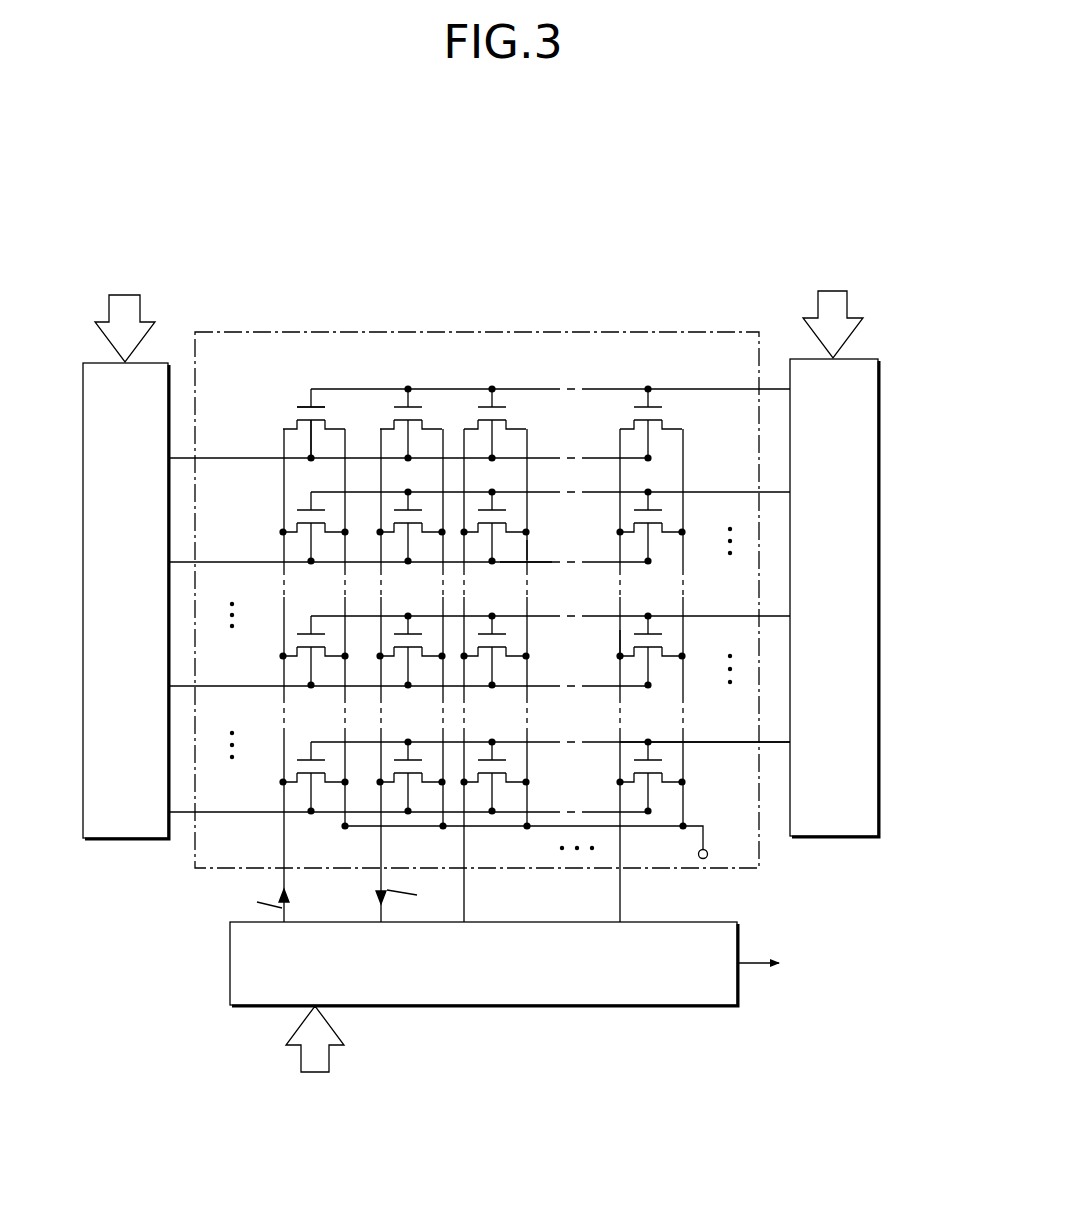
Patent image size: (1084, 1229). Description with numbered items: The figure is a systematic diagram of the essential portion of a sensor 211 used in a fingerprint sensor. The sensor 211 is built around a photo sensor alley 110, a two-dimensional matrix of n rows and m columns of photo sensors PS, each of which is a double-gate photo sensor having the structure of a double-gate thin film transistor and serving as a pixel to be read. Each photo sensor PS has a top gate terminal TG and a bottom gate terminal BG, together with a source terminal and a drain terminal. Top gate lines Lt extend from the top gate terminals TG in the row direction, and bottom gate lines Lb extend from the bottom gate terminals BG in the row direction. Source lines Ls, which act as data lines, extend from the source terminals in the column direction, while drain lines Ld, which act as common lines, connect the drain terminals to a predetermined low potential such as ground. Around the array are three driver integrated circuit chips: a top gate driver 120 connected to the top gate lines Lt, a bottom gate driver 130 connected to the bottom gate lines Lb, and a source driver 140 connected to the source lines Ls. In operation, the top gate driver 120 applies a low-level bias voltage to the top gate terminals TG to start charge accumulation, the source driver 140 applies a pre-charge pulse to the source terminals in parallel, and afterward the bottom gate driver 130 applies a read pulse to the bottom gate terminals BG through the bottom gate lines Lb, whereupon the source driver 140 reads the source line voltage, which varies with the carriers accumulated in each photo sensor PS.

The sensor 211 is at (332, 250).
The photo sensor alley 110 is at (608, 332).
The top gate driver 120 is at (852, 838).
The bottom gate driver 130 is at (128, 840).
The source driver 140 is at (680, 1007).
The photo sensor PS is at (302, 399).
The top gate terminal TG is at (290, 405).
The bottom gate terminal BG is at (312, 455).
The top gate line Lt is at (448, 387).
The bottom gate line Lb is at (540, 457).
The source line Ls is at (282, 823).
The drain line Ld is at (685, 440).